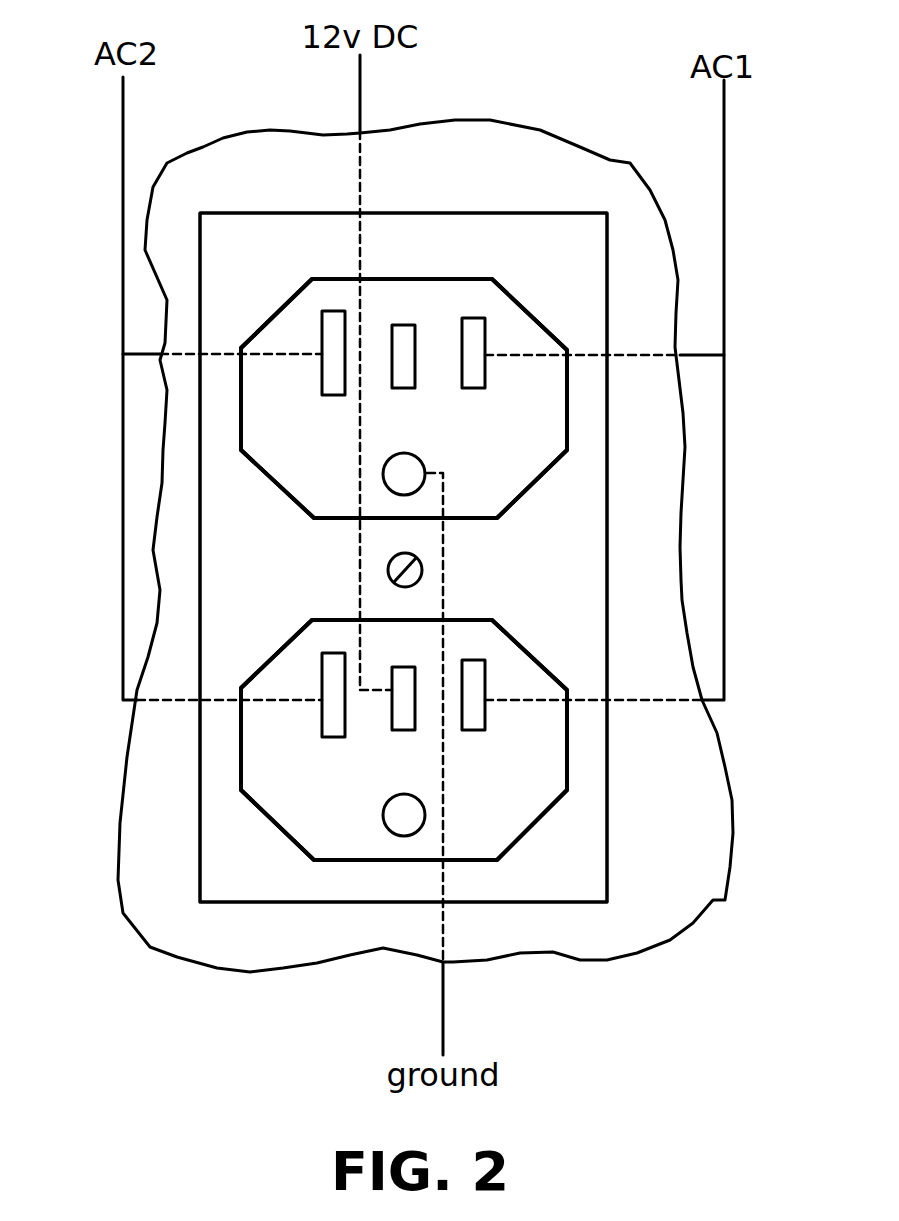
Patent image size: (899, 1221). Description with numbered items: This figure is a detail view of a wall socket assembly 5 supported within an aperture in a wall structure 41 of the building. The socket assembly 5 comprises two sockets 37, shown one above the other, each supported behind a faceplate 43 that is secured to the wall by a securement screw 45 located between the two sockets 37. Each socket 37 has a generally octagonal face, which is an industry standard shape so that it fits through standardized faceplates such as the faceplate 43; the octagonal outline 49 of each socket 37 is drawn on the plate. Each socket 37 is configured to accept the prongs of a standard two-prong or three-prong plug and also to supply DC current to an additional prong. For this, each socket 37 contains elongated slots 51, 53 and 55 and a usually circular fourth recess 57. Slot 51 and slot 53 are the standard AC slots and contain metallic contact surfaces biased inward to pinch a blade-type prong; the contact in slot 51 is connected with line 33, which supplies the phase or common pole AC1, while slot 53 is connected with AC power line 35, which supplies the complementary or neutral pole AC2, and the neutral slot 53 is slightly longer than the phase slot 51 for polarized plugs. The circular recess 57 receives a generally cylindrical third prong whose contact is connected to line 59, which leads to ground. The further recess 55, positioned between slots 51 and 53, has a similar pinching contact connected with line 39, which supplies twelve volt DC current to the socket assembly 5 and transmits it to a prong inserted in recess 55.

The socket assembly 5 is at (467, 245).
The line 33 is at (724, 227).
The AC power line 35 is at (122, 240).
The socket 37 is at (532, 382).
The line 39 is at (360, 103).
The wall structure 41 is at (686, 868).
The faceplate 43 is at (587, 507).
The securement screw 45 is at (424, 572).
The receptacle 49 is at (268, 408).
The slot 51 is at (490, 335).
The slot 53 is at (322, 348).
The recess 55 is at (418, 325).
The recess 57 is at (383, 477).
The line 59 is at (445, 1006).